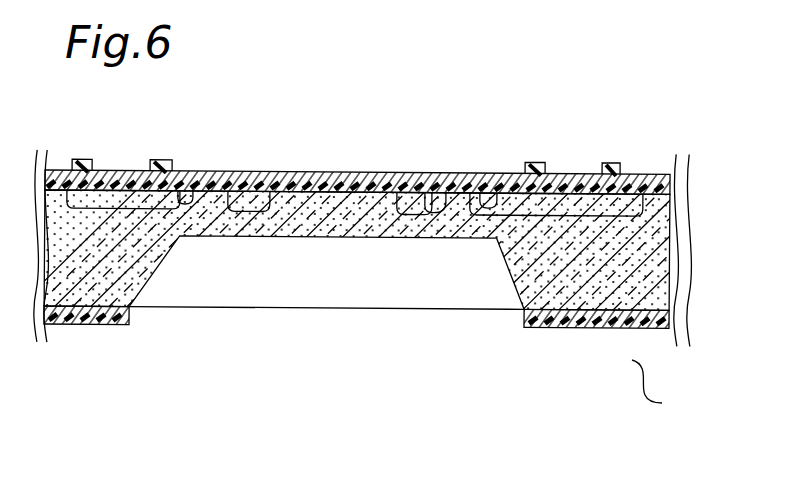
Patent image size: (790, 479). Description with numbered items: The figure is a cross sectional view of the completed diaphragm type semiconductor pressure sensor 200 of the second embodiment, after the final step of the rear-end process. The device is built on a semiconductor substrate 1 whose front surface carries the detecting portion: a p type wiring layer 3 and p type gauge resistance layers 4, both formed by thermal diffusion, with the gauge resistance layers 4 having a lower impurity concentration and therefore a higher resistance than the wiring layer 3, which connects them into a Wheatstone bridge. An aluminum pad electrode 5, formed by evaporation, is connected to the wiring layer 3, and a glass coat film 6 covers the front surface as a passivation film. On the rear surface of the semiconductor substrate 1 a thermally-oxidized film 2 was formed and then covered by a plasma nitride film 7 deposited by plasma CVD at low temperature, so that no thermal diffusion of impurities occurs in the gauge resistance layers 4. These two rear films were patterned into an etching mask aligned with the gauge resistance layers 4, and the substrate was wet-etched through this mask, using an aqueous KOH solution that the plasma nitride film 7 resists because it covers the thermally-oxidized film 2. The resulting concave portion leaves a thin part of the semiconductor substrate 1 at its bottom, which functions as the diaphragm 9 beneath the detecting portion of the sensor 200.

The semiconductor substrate 1 is at (553, 247).
The thermally-oxidized film 2 is at (232, 190).
The wiring layer 3 is at (418, 174).
The gauge resistance layer 4 is at (480, 172).
The pad electrode 5 is at (112, 170).
The glass coat film 6 is at (290, 171).
The plasma nitride film 7 is at (120, 325).
The diaphragm 9 is at (266, 230).
The semiconductor pressure sensor 200 is at (671, 389).